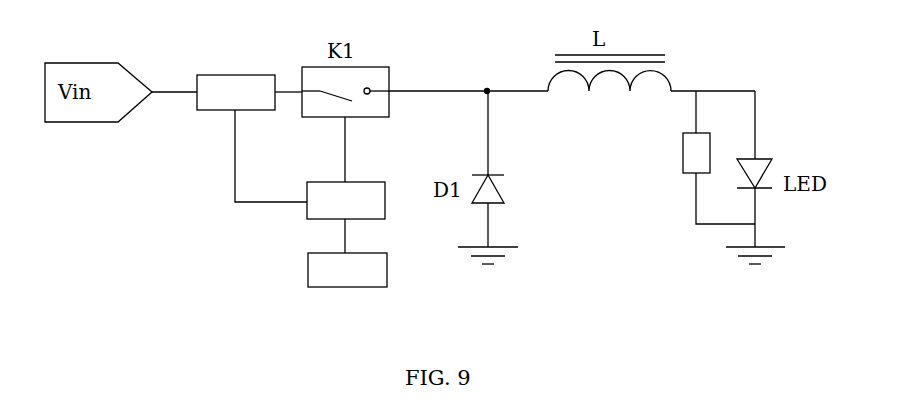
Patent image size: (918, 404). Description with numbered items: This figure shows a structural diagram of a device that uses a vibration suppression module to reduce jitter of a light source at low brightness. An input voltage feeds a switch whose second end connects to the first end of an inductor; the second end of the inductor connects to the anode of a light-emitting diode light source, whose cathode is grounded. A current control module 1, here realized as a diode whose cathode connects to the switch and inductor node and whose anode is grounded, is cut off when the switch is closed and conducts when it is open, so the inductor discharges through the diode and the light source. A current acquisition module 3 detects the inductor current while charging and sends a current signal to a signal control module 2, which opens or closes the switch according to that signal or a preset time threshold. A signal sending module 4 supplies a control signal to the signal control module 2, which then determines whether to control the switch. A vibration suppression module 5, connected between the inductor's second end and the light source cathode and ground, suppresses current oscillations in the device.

The current control module 1 is at (505, 190).
The signal control module 2 is at (323, 208).
The current acquisition module 3 is at (222, 97).
The signal sending module 4 is at (342, 280).
The vibration suppression module 5 is at (697, 148).